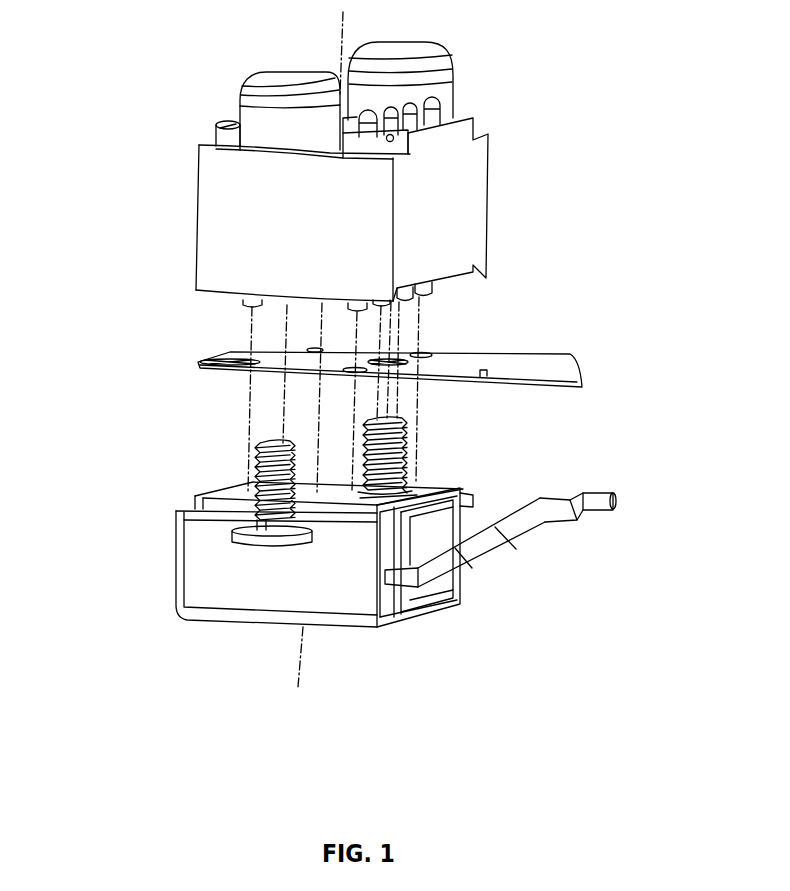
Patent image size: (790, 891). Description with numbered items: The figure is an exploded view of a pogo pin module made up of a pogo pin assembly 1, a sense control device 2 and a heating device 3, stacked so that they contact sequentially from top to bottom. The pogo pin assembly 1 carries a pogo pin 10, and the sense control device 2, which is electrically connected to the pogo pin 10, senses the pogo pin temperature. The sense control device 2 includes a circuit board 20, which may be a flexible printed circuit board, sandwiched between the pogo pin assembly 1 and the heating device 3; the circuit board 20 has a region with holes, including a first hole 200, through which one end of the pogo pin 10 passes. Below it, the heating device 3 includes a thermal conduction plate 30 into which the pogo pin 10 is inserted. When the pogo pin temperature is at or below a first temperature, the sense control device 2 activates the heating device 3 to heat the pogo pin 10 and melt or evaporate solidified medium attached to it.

The pogo pin assembly 1 is at (438, 203).
The pogo pin 10 is at (430, 110).
The sense control device 2 is at (537, 368).
The circuit board 20 is at (437, 361).
The first hole 200 is at (247, 364).
The heating device 3 is at (213, 528).
The thermal conduction plate 30 is at (405, 488).